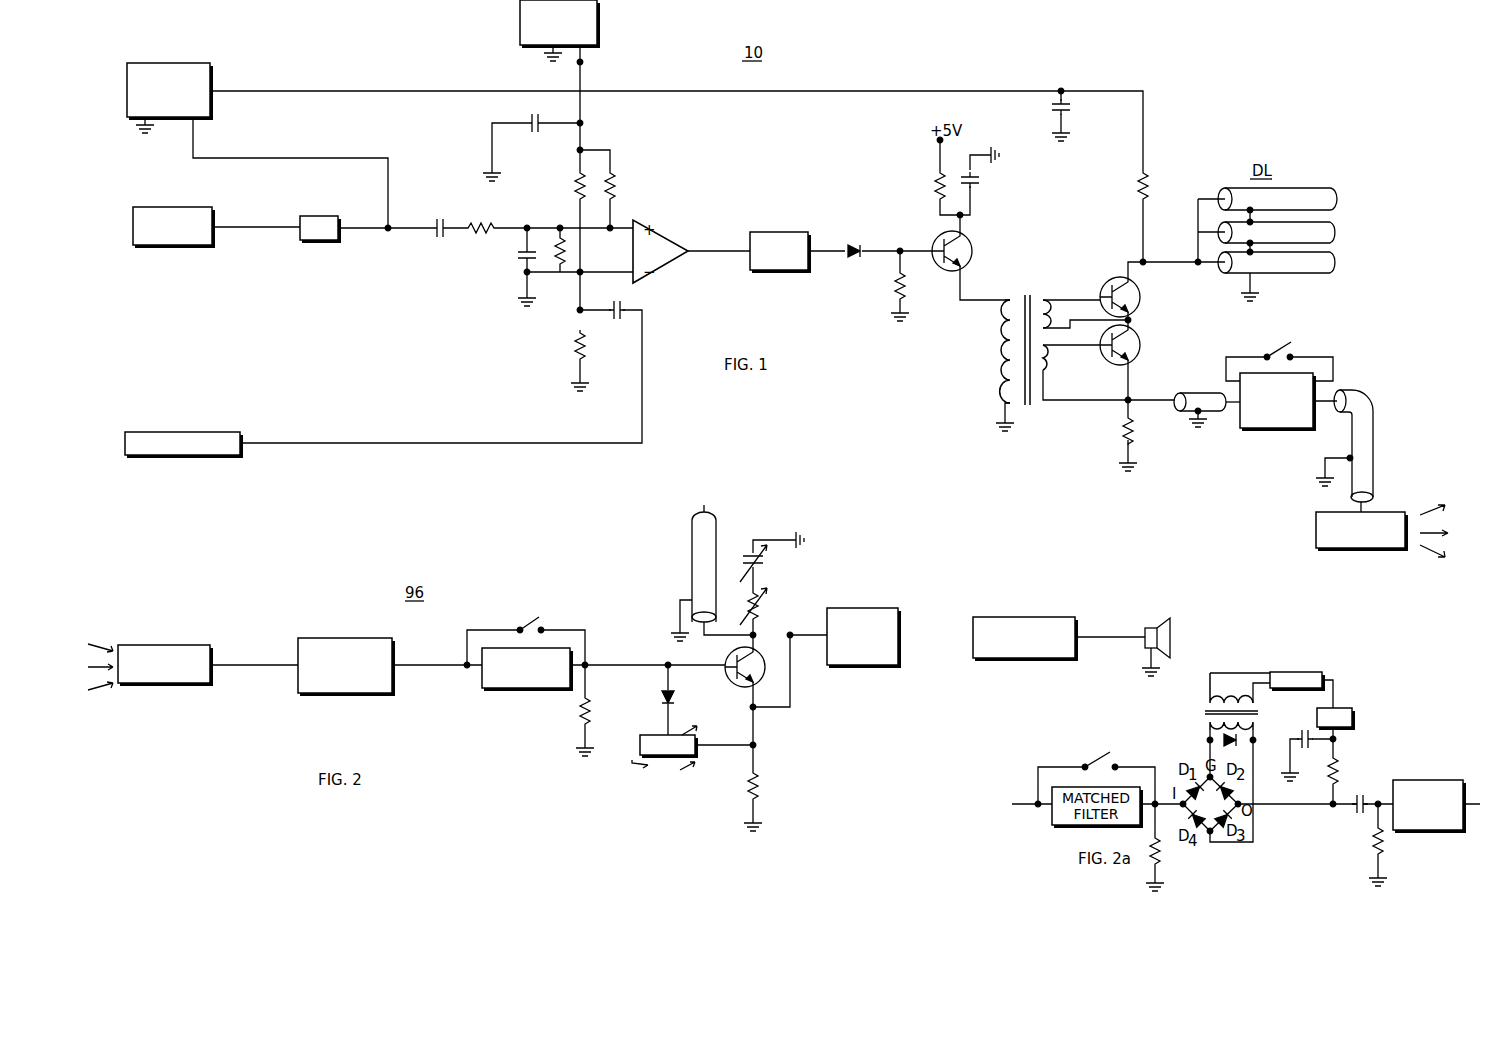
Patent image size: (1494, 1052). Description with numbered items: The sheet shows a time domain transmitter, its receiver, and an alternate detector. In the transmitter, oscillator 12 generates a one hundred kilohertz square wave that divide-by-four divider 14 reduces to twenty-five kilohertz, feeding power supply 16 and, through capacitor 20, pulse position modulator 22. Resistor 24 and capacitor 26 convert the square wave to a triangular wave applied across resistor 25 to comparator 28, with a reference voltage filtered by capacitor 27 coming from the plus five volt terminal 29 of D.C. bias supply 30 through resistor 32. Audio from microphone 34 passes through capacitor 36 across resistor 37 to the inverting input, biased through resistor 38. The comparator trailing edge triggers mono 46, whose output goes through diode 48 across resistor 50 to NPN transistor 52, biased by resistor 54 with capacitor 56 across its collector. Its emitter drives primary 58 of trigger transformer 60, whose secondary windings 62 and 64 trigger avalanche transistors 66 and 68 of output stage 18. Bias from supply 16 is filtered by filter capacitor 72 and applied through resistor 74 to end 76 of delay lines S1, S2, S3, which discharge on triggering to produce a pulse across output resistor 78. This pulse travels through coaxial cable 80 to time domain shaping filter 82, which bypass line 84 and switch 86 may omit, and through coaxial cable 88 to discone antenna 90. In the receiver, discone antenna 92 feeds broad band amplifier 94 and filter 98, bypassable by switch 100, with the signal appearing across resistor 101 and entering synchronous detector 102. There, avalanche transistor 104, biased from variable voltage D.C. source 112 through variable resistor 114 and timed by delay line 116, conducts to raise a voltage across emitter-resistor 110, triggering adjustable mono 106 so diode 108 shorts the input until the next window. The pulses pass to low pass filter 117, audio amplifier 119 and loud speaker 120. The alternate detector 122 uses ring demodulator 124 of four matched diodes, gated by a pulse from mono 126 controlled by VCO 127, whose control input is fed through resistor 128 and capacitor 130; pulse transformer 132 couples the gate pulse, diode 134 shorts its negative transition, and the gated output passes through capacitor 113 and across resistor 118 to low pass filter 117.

In FIG. 1, the oscillator 12 is at (170, 207).
In FIG. 1, the divide-by-4 divider 14 is at (320, 216).
In FIG. 1, the power supply 16 is at (205, 62).
In FIG. 1, the output stage 18 is at (1066, 273).
In FIG. 1, the capacitor 20 is at (444, 222).
In FIG. 1, the pulse position modulator 22 is at (646, 185).
In FIG. 1, the resistor 24 is at (485, 234).
In FIG. 1, the resistor 25 is at (563, 266).
In FIG. 1, the capacitor 26 is at (518, 257).
In FIG. 1, the capacitor 27 is at (535, 114).
In FIG. 1, the comparator 28 is at (664, 225).
In FIG. 1, the +5 volt terminal 29 is at (583, 62).
In FIG. 1, the D.C. bias supply 30 is at (598, 30).
In FIG. 1, the resistor 32 is at (614, 195).
In FIG. 1, the microphone 34 is at (205, 432).
In FIG. 1, the capacitor 36 is at (624, 319).
In FIG. 1, the resistor 37 is at (576, 345).
In FIG. 1, the resistor 38 is at (575, 182).
In FIG. 1, the mono 46 is at (780, 232).
In FIG. 1, the diode 48 is at (853, 243).
In FIG. 1, the resistor 50 is at (896, 284).
In FIG. 1, the NPN transistor 52 is at (973, 249).
In FIG. 1, the resistor 54 is at (936, 184).
In FIG. 1, the capacitor 56 is at (978, 183).
In FIG. 1, the primary 58 is at (1001, 348).
In FIG. 1, the trigger transformer 60 is at (1033, 286).
In FIG. 1, the secondary winding 62 is at (1050, 313).
In FIG. 1, the secondary winding 64 is at (1049, 358).
In FIG. 1, the avalanche transistor 66 is at (1108, 282).
In FIG. 1, the avalanche transistor 68 is at (1115, 362).
In FIG. 1, the filter capacitor 72 is at (1067, 112).
In FIG. 1, the resistor 74 is at (1139, 182).
In FIG. 1, the end 76 is at (1220, 195).
In FIG. 1, the output resistor 78 is at (1124, 426).
In FIG. 1, the coaxial cable 80 is at (1205, 392).
In FIG. 1, the time domain shaping filter 82 is at (1286, 429).
In FIG. 1, the bypass line 84 is at (1335, 370).
In FIG. 1, the switch 86 is at (1283, 345).
In FIG. 1, the coaxial cable 88 is at (1374, 423).
In FIG. 1, the discone antenna 90 is at (1314, 527).
In FIG. 1, the delay line section S1 is at (1337, 195).
In FIG. 1, the delay line section S2 is at (1337, 229).
In FIG. 1, the delay line section S3 is at (1337, 259).
In FIG. 2, the discone antenna 92 is at (173, 645).
In FIG. 2, the broad band amplifier 94 is at (325, 638).
In FIG. 2, the filter 98 is at (537, 690).
In FIG. 2, the switch 100 is at (530, 617).
In FIG. 2, the resistor 101 is at (590, 710).
In FIG. 2A, the resistor 101 is at (1160, 855).
In FIG. 2, the synchronous detector 102 is at (668, 583).
In FIG. 2, the avalanche transistor 104 is at (728, 655).
In FIG. 2, the adjustable mono 106 is at (664, 754).
In FIG. 2, the diode 108 is at (676, 700).
In FIG. 2, the emitter-resistor 110 is at (758, 784).
In FIG. 2, the variable voltage D.C. source 112 is at (762, 565).
In FIG. 2A, the capacitor 113 is at (1357, 814).
In FIG. 2, the variable resistor 114 is at (760, 605).
In FIG. 2, the delay line 116 is at (690, 548).
In FIG. 2, the low pass filter 117 is at (860, 608).
In FIG. 2A, the low pass filter 117 is at (1440, 780).
In FIG. 2A, the resistor 118 is at (1383, 845).
In FIG. 2, the audio amplifier 119 is at (1036, 617).
In FIG. 2, the loud speaker 120 is at (1172, 640).
In FIG. 2A, the detector 122 is at (1175, 748).
In FIG. 2A, the ring demodulator 124 is at (1264, 871).
In FIG. 2A, the mono 126 is at (1283, 672).
In FIG. 2A, the VCO 127 is at (1353, 720).
In FIG. 2A, the resistor 128 is at (1338, 768).
In FIG. 2A, the capacitor 130 is at (1303, 733).
In FIG. 2A, the pulse transformer 132 is at (1200, 712).
In FIG. 2A, the diode 134 is at (1222, 742).